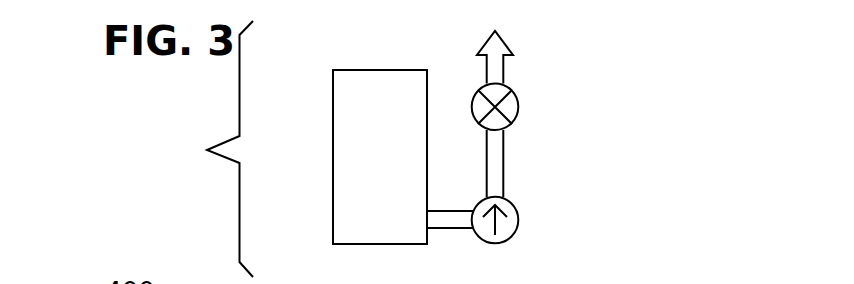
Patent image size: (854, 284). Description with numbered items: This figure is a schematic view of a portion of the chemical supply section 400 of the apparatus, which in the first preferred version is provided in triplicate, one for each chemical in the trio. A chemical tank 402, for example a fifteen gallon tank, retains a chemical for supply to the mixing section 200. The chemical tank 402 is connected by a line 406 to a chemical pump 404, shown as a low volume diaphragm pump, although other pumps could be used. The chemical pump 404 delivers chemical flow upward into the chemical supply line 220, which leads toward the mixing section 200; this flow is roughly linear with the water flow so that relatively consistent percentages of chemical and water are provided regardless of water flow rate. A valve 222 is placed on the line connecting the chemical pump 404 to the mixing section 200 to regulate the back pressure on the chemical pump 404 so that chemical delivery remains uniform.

The mixing section 200 is at (495, 19).
The chemical supply line 220 is at (503, 71).
The valve 222 is at (518, 112).
The chemical supply section 400 is at (192, 149).
The chemical tank 402 is at (376, 70).
The chemical pump 404 is at (518, 220).
The line 406 is at (449, 228).